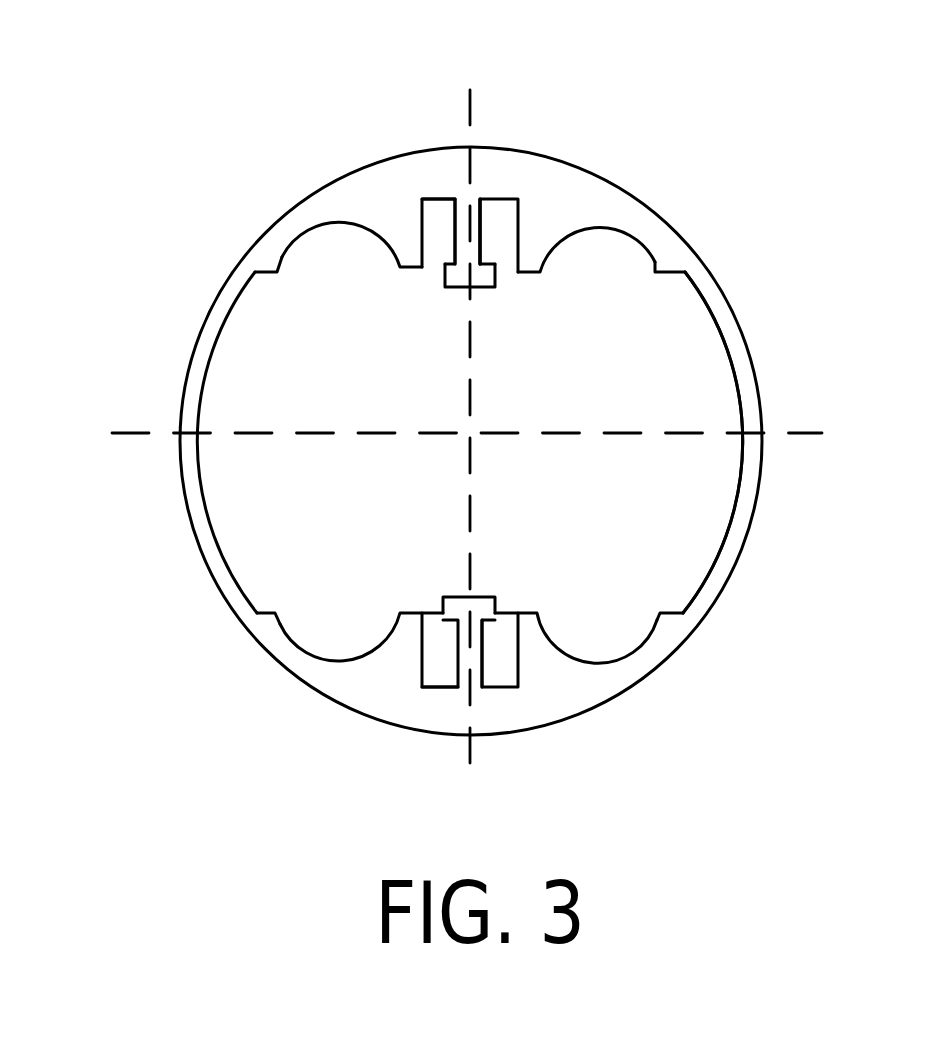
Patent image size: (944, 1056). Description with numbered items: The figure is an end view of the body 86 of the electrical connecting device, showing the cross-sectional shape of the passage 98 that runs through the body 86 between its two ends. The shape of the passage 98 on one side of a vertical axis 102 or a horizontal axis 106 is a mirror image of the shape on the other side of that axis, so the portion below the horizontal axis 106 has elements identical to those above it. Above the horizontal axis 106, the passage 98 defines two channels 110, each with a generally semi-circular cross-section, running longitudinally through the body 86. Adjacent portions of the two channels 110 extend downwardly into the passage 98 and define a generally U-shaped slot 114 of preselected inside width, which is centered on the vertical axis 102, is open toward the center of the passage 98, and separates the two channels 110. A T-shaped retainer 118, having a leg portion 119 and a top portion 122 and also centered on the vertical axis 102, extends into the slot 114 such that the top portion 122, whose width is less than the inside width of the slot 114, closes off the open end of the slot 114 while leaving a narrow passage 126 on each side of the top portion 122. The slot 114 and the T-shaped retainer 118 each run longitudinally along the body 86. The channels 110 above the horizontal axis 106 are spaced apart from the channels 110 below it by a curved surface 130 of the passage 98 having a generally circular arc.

The body 86 is at (620, 186).
The passage 98 is at (670, 330).
The vertical axis 102 is at (468, 93).
The horizontal axis 106 is at (130, 435).
The channels 110 is at (305, 233).
The slot 114 is at (445, 197).
The T-shaped retainer 118 is at (485, 209).
The leg portion 119 is at (487, 237).
The top portion 122 is at (462, 288).
The narrow passage 126 is at (436, 266).
The curved surface 130 is at (239, 297).